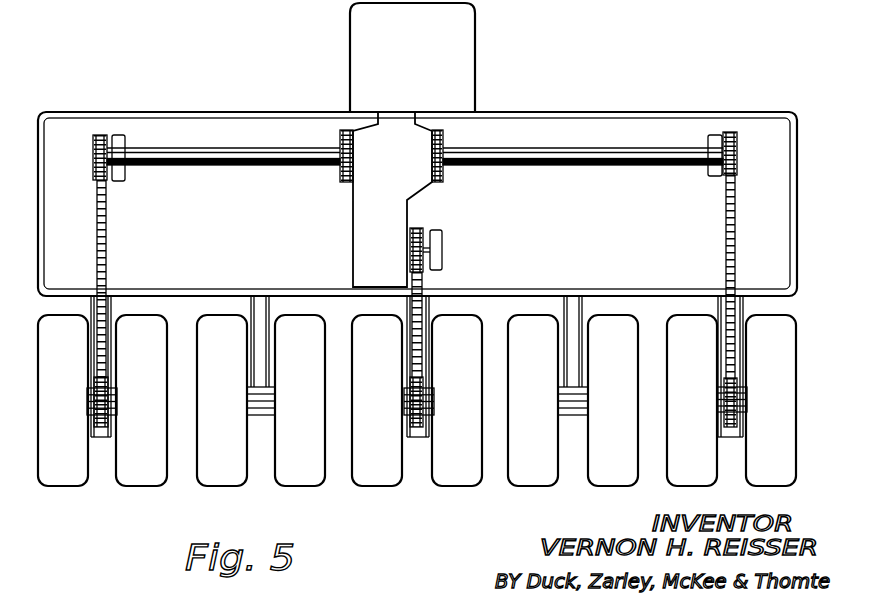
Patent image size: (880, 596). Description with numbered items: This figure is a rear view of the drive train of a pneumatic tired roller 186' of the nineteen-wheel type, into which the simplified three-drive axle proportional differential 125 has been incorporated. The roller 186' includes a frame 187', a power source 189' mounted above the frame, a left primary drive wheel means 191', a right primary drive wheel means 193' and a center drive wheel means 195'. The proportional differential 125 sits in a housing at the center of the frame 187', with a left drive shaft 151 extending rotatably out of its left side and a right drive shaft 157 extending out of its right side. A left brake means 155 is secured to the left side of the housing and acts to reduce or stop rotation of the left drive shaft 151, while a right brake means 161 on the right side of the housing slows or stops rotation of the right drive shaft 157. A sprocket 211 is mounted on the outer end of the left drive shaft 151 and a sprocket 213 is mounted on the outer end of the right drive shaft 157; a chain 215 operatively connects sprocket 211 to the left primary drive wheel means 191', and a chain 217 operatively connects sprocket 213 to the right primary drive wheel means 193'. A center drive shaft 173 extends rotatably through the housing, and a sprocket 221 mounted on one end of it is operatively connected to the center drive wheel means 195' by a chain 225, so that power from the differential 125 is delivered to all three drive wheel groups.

The frame 187' is at (417, 180).
The pneumatic tired roller 186' is at (417, 175).
The power source 189' is at (442, 57).
The three-drive axle proportional differential 125 is at (430, 198).
The left drive shaft 151 is at (237, 150).
The right drive shaft 157 is at (592, 150).
The sprocket 211 is at (107, 136).
The left brake means 155 is at (343, 181).
The right brake means 161 is at (443, 139).
The sprocket 213 is at (738, 145).
The sprocket 221 is at (420, 229).
The center drive shaft 173 is at (428, 248).
The chain 215 is at (104, 243).
The chain 225 is at (428, 283).
The chain 217 is at (726, 218).
The left primary drive wheel means 191' is at (102, 404).
The center drive wheel means 195' is at (416, 404).
The right primary drive wheel means 193' is at (731, 402).